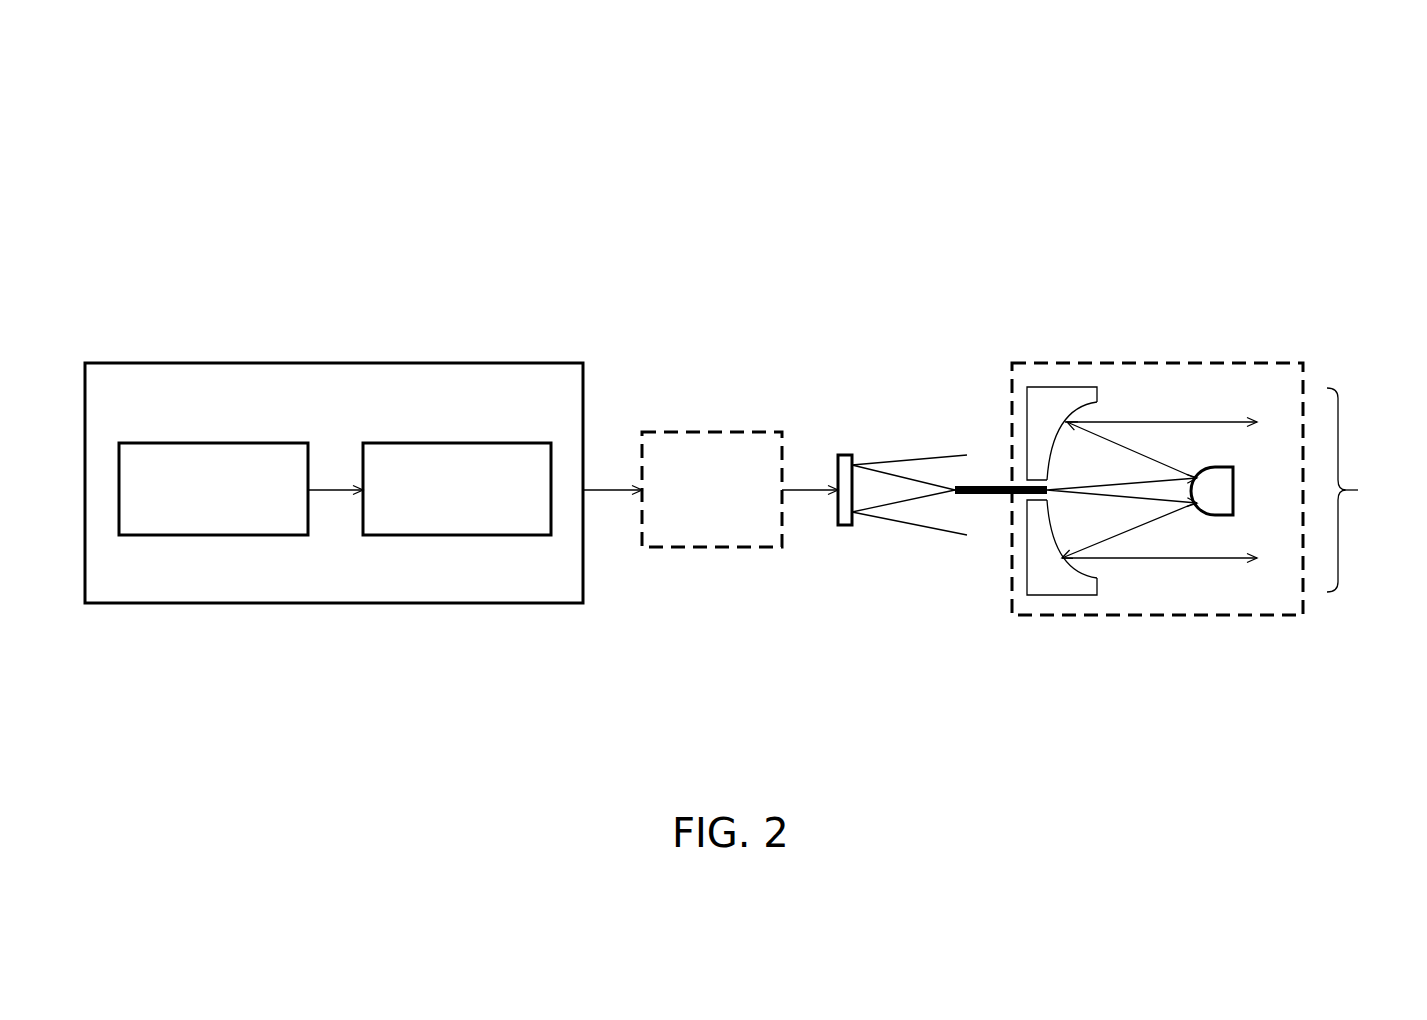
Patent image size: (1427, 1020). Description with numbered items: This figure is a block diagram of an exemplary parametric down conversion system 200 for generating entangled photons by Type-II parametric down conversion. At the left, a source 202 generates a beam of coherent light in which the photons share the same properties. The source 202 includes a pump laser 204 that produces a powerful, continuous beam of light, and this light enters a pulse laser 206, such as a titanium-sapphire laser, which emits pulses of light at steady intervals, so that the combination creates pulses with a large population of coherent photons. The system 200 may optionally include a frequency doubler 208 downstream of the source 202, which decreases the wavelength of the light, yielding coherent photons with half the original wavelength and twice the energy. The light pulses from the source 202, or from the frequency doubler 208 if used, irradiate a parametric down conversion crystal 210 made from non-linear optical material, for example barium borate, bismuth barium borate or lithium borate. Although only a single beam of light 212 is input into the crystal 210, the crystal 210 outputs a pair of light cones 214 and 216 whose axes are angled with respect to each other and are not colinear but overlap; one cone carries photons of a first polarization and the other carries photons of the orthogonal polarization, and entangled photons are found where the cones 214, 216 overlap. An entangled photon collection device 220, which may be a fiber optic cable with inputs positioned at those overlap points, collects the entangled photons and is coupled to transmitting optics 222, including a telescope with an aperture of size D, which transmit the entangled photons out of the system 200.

The parametric down conversion system 200 is at (237, 177).
The source 202 is at (190, 345).
The pump laser 204 is at (180, 438).
The pulse laser 206 is at (423, 438).
The frequency doubler 208 is at (688, 417).
The parametric down conversion crystal 210 is at (845, 440).
The single beam of light 212 is at (807, 493).
The light cone 214 is at (932, 440).
The light cone 216 is at (932, 542).
The entangled photon collection device 220 is at (980, 475).
The transmitting optics 222 is at (1158, 358).